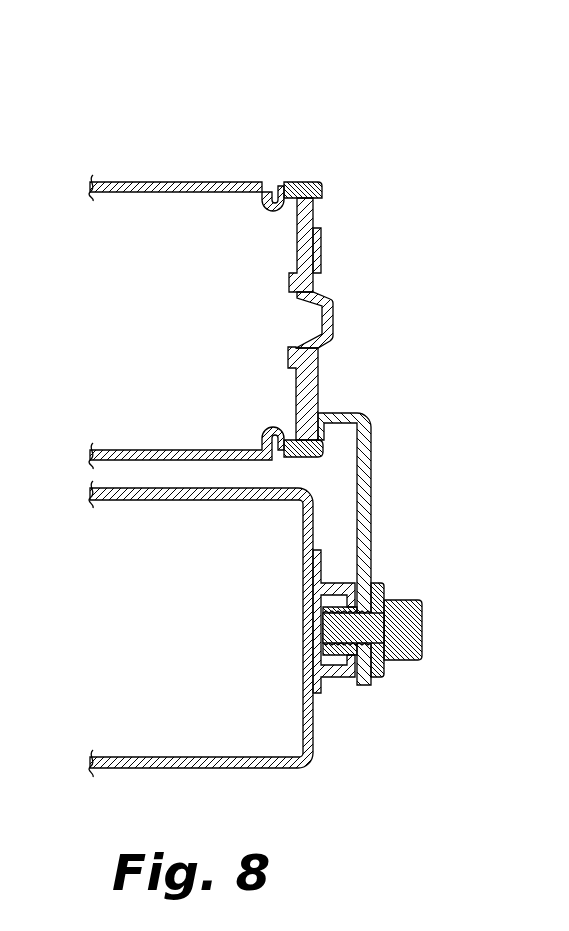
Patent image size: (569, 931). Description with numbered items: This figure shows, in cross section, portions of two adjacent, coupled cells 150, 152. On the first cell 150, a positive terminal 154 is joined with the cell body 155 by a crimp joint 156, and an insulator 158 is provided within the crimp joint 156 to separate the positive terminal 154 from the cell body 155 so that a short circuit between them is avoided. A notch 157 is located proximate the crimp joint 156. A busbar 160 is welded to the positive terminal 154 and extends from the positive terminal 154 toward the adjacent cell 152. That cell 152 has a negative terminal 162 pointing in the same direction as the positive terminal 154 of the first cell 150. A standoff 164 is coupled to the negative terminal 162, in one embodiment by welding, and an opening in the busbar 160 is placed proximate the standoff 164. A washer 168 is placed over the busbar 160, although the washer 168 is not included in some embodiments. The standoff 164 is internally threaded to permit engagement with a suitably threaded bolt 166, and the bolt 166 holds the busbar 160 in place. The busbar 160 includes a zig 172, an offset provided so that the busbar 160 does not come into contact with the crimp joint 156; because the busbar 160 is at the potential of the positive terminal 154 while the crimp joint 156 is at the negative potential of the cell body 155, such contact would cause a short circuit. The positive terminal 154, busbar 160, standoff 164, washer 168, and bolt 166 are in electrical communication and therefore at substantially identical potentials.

The cell 150 is at (197, 329).
The cell 152 is at (197, 641).
The positive terminal 154 is at (333, 318).
The cell body 155 is at (135, 182).
The crimp joint 156 is at (298, 182).
The notch 157 is at (276, 192).
The insulator 158 is at (318, 207).
The busbar 160 is at (318, 252).
The negative terminal 162 is at (316, 738).
The standoff 164 is at (322, 690).
The bolt 166 is at (415, 600).
The washer 168 is at (384, 678).
The zig 172 is at (372, 438).